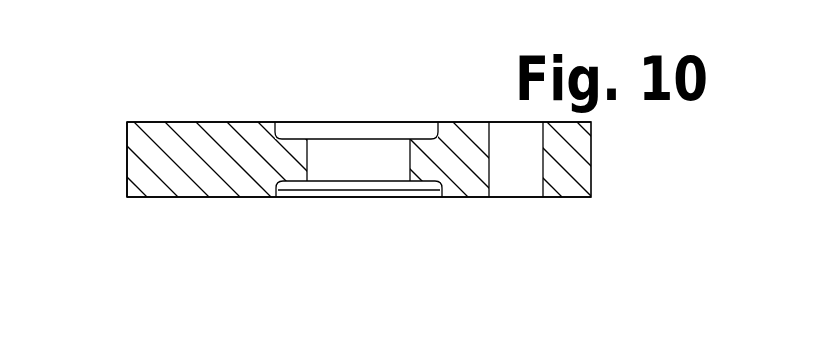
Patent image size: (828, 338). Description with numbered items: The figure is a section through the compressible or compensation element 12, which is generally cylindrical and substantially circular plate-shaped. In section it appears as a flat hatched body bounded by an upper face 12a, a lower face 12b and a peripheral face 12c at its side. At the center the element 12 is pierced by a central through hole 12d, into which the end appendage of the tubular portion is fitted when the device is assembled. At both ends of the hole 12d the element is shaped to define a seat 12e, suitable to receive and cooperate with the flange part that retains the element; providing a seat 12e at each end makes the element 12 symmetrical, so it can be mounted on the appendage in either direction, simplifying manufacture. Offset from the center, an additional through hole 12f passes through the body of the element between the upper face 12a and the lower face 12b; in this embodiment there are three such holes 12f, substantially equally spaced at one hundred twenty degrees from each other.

The compensation element 12 is at (468, 213).
The upper face 12a is at (174, 121).
The lower face 12b is at (176, 198).
The peripheral face 12c is at (126, 156).
The central through hole 12d is at (309, 155).
The seat 12e is at (436, 136).
The through holes 12f is at (544, 186).